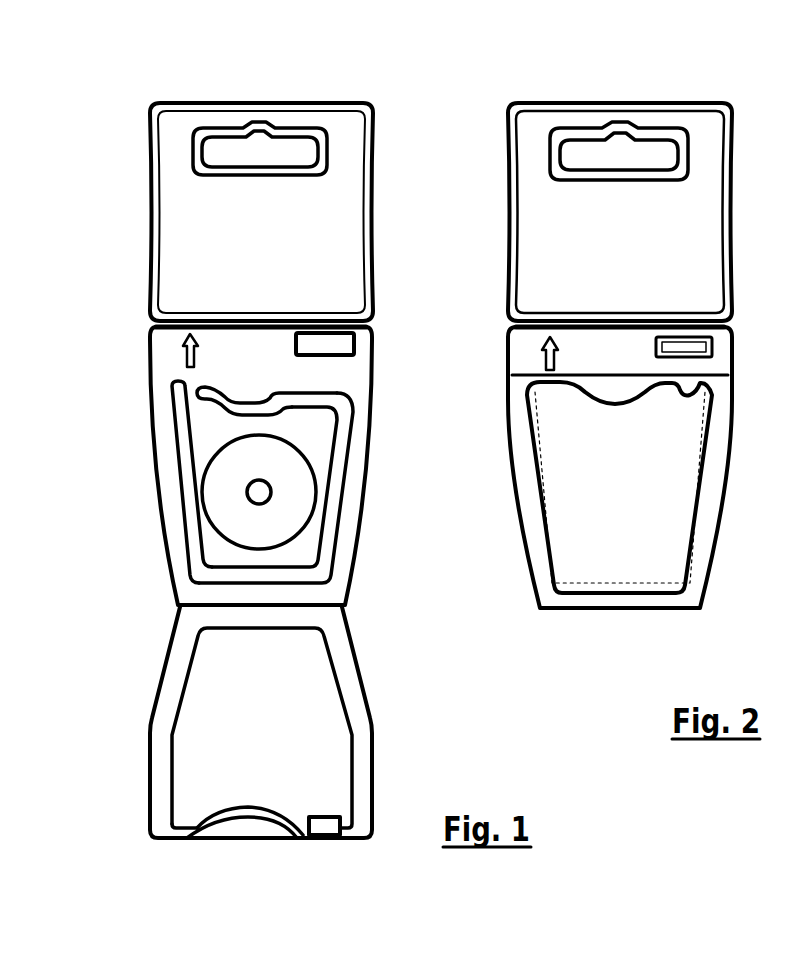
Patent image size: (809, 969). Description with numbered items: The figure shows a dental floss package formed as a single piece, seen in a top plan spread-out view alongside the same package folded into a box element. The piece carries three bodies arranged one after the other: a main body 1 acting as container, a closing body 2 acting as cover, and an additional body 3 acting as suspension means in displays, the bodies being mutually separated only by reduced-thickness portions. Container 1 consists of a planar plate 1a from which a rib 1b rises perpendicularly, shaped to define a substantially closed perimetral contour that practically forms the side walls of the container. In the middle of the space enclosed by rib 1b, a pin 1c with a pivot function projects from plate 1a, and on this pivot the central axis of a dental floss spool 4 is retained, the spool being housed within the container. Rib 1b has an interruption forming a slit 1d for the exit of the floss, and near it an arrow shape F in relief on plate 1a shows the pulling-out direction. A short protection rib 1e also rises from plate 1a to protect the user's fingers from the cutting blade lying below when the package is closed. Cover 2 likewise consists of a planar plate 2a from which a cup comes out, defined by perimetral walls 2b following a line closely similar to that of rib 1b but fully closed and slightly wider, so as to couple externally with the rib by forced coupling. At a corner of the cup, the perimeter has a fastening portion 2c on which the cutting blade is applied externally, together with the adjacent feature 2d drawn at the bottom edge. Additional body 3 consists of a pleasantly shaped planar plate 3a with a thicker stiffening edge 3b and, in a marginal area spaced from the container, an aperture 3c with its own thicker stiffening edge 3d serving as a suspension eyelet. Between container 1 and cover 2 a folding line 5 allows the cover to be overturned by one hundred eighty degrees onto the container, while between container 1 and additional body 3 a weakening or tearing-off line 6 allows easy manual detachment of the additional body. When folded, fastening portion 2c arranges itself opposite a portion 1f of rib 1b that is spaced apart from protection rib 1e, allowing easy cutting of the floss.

The main body 1 is at (250, 441).
The planar plate 1a is at (353, 372).
The rib 1b is at (340, 467).
The pin 1c is at (257, 492).
The slit 1d is at (203, 388).
The protection rib 1e is at (333, 342).
The portion of rib 1f is at (333, 392).
The closing body 2 is at (249, 753).
The planar plate 2a is at (160, 740).
The perimetral walls 2b is at (352, 733).
The fastening portion 2c is at (322, 823).
The finger notch 2d is at (190, 827).
The additional body 3 is at (244, 182).
The planar plate 3a is at (320, 255).
The stiffening edge 3b is at (370, 178).
The aperture 3c is at (259, 152).
The stiffening edge 3d is at (203, 155).
The dental floss spool 4 is at (290, 517).
The folding line 5 is at (215, 600).
The weakening line 6 is at (373, 327).
The arrow shape F is at (183, 348).